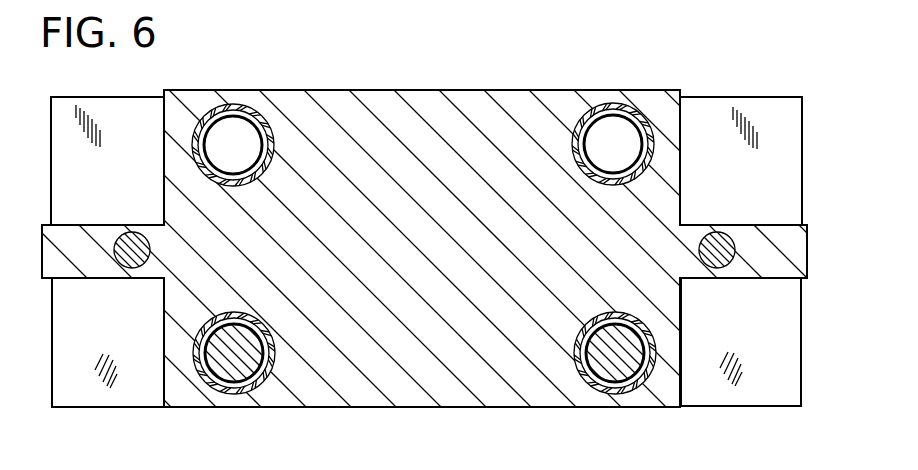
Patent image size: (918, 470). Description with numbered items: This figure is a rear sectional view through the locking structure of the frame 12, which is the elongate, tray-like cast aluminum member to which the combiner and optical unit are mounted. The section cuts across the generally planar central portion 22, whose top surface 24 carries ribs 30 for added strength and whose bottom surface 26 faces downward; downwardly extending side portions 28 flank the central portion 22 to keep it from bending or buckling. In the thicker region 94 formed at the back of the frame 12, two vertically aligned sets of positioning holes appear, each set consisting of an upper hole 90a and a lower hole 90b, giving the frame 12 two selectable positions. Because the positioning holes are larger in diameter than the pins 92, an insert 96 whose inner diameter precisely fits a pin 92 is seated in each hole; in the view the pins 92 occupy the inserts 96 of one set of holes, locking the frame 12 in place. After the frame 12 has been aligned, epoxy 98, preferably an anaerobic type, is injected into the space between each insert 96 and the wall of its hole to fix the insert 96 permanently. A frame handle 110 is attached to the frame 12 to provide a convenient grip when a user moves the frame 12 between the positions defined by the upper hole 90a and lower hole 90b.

The frame 12 is at (478, 90).
The rib 30 is at (112, 97).
The top surface 24 is at (77, 225).
The central portion 22 is at (143, 223).
The bottom surface 26 is at (95, 279).
The side portion 28 is at (52, 360).
The frame handle 110 is at (125, 262).
The epoxy 98 is at (272, 136).
The insert 96 is at (248, 110).
The pin 92 is at (243, 153).
The upper hole 90a is at (231, 124).
The lower hole 90b is at (214, 350).
The thicker region 94 is at (426, 407).